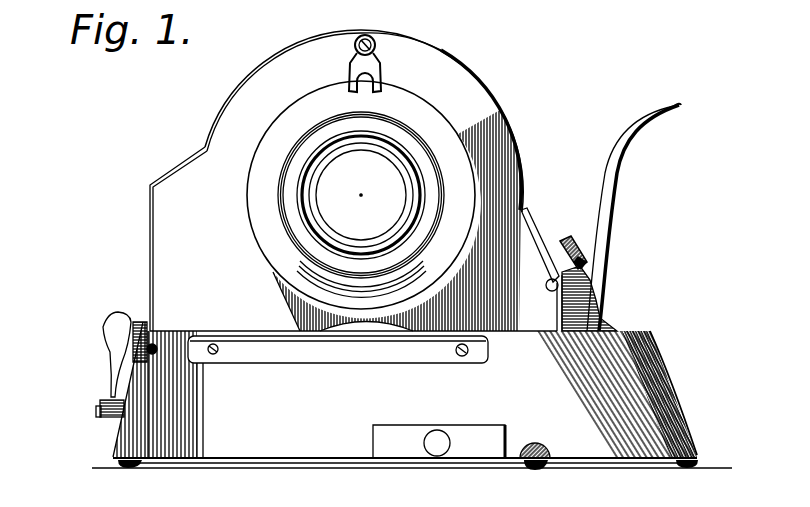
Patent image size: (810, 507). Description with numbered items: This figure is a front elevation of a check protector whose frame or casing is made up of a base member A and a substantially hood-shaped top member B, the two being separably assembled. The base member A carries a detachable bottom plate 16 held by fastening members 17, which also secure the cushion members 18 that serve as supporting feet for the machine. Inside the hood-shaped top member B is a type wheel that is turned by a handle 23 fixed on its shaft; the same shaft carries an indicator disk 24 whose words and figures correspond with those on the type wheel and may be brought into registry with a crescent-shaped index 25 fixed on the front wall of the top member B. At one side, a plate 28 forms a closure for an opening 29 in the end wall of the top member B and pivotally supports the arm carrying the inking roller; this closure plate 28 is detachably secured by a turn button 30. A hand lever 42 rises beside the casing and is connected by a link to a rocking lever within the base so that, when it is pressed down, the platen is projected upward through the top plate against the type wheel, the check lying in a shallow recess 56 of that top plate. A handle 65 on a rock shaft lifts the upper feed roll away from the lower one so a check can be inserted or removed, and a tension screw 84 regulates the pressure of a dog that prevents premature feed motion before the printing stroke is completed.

The base member A is at (530, 397).
The top member B is at (497, 147).
The bottom plate 16 is at (292, 462).
The fastening members 17 is at (517, 458).
The cushion members 18 is at (125, 463).
The handle 23 is at (325, 212).
The indicator disk 24 is at (430, 128).
The crescent-shaped index 25 is at (373, 56).
The plate 28 is at (530, 237).
The opening 29 is at (567, 297).
The turn button 30 is at (578, 258).
The hand lever 42 is at (607, 203).
The shallow recess 56 is at (247, 334).
The handle 65 is at (113, 353).
The tension screw 84 is at (155, 346).